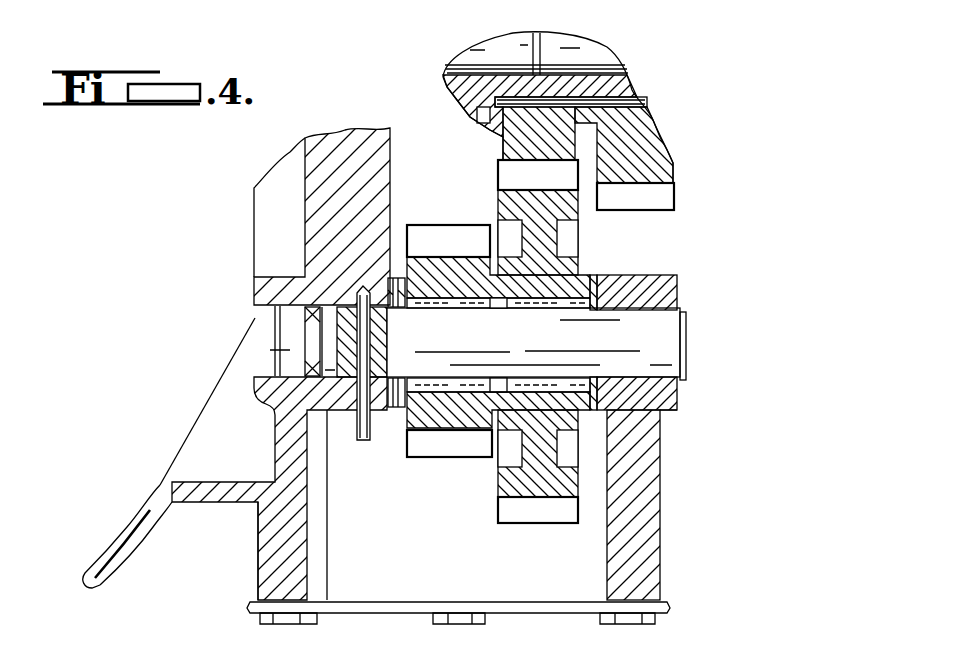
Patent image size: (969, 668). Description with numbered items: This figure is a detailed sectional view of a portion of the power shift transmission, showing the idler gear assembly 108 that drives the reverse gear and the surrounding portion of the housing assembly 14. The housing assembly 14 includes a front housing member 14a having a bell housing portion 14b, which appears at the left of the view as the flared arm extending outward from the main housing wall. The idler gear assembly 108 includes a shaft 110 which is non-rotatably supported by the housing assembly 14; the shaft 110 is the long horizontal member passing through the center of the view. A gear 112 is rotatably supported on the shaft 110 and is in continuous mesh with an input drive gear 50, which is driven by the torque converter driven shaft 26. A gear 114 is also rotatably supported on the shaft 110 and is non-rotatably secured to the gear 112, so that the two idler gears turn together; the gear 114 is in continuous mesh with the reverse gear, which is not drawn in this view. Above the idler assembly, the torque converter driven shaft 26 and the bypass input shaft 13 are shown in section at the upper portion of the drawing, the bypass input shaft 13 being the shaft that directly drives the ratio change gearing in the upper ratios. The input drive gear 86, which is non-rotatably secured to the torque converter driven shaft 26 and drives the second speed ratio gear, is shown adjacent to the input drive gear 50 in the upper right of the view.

The bypass input shaft 13 is at (600, 50).
The torque converter driven shaft 26 is at (443, 77).
The input drive gear 50 is at (503, 148).
The input drive gear 86 is at (677, 167).
The shaft 110 is at (687, 338).
The gear 114 is at (396, 432).
The gear 112 is at (500, 478).
The idler gear assembly 108 is at (433, 467).
The housing assembly 14 is at (252, 557).
The front housing member 14a is at (257, 583).
The bell housing portion 14b is at (116, 559).